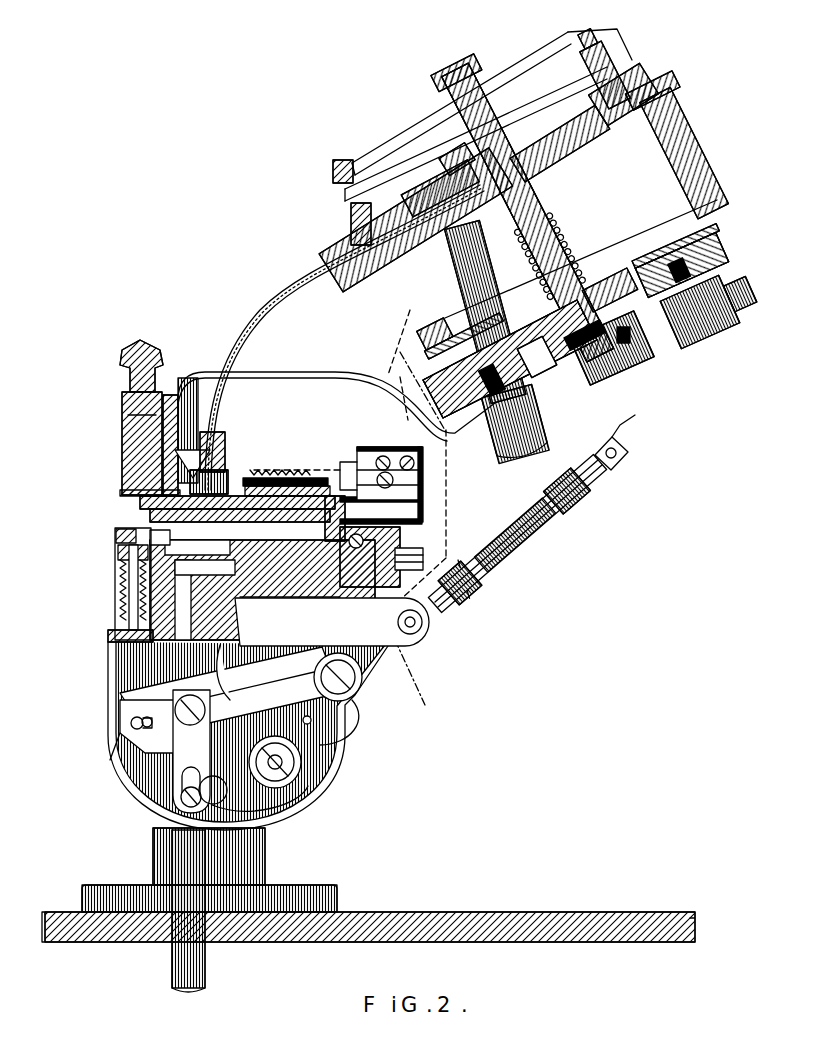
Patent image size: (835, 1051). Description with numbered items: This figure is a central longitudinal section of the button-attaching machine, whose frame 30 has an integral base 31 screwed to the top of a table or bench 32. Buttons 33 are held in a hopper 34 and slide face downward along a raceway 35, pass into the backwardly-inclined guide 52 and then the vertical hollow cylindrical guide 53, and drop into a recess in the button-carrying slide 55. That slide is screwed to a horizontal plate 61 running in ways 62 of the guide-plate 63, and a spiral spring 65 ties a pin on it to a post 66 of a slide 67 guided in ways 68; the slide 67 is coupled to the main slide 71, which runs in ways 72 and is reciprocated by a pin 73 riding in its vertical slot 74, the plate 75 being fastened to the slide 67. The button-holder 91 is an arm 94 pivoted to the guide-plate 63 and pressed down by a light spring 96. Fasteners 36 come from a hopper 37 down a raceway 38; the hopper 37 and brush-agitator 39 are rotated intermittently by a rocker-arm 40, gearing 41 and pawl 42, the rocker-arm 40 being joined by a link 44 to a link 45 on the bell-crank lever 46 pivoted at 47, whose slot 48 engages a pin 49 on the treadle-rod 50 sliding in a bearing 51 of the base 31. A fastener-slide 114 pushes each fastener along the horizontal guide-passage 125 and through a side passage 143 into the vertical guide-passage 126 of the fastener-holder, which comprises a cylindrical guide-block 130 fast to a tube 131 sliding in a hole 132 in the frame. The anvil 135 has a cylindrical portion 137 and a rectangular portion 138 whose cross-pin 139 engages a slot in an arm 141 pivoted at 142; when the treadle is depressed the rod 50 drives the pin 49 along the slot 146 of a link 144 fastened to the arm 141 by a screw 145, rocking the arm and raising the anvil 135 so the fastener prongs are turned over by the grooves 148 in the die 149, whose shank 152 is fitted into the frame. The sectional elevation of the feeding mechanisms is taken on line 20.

The frame 30 is at (350, 738).
The base 31 is at (82, 898).
The table or bench 32 is at (500, 920).
The buttons 33 is at (390, 230).
The hopper 34 is at (610, 42).
The raceway 35 is at (250, 310).
The fasteners 36 is at (478, 318).
The hopper 37 is at (612, 228).
The raceway 38 is at (412, 371).
The brush-agitator 39 is at (580, 48).
The rocker-arm 40 is at (620, 432).
The gearing 41 is at (625, 340).
The pawl 42 is at (630, 318).
The link 44 is at (520, 540).
The link 45 is at (332, 622).
The bell-crank lever 46 is at (220, 740).
The pivot 47 is at (302, 765).
The slot 48 is at (268, 766).
The pin 49 is at (300, 805).
The treadle-rod 50 is at (210, 966).
The bearing 51 is at (266, 850).
The backwardly-inclined guide 52 is at (200, 462).
The vertical hollow cylindrical guide 53 is at (222, 476).
The button-carrying slide 55 is at (140, 503).
The horizontal plate 61 is at (290, 480).
The ways 62 is at (425, 490).
The guide-plate 63 is at (425, 470).
The spiral spring 65 is at (305, 474).
The post 66 is at (344, 514).
The slide 67 is at (364, 541).
The ways 68 is at (432, 535).
The main slide 71 is at (320, 562).
The ways 72 is at (416, 561).
The pin 73 is at (262, 628).
The vertical slot 74 is at (269, 618).
The plate 75 is at (190, 534).
The button-holder 91 is at (120, 492).
The arm 94 is at (372, 462).
The light spring 96 is at (345, 468).
The section line 20 is at (430, 524).
The fastener-slide 114 is at (120, 560).
The horizontal guide-passage 125 is at (196, 571).
The vertical guide-passage 126 is at (116, 540).
The cylindrical guide-block 130 is at (118, 530).
The tube 131 is at (118, 604).
The hole 132 is at (108, 634).
The anvil 135 is at (132, 582).
The cylindrical portion 137 is at (160, 673).
The rectangular portion 138 is at (122, 745).
The cross-pin 139 is at (131, 723).
The arm 141 is at (230, 692).
The pivot 142 is at (365, 690).
The side passage 143 is at (147, 528).
The link 144 is at (192, 751).
The screw 145 is at (140, 710).
The slot 146 is at (199, 784).
The grooves 148 is at (180, 800).
The die 149 is at (130, 478).
The shank 152 is at (122, 448).